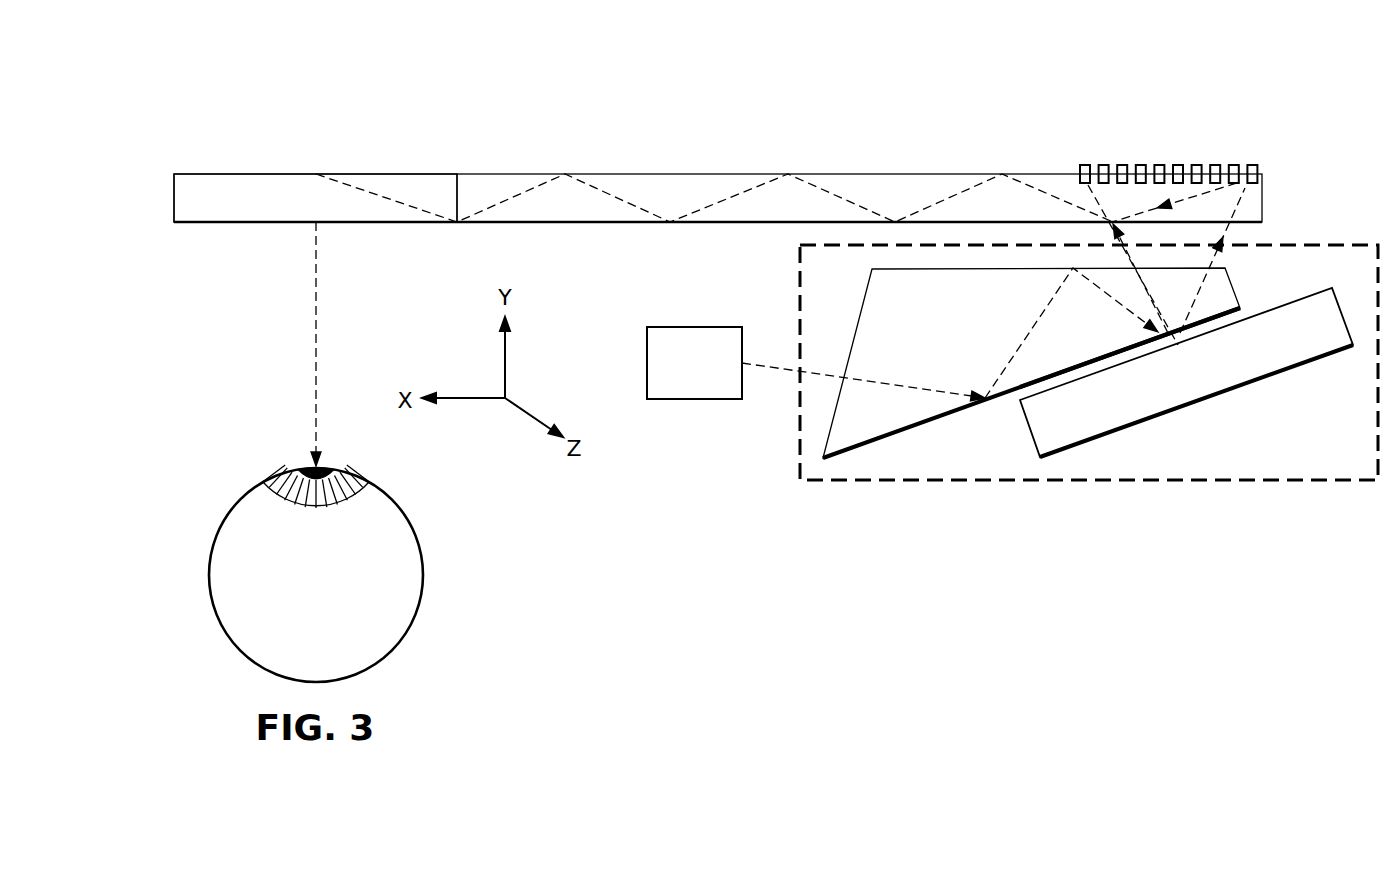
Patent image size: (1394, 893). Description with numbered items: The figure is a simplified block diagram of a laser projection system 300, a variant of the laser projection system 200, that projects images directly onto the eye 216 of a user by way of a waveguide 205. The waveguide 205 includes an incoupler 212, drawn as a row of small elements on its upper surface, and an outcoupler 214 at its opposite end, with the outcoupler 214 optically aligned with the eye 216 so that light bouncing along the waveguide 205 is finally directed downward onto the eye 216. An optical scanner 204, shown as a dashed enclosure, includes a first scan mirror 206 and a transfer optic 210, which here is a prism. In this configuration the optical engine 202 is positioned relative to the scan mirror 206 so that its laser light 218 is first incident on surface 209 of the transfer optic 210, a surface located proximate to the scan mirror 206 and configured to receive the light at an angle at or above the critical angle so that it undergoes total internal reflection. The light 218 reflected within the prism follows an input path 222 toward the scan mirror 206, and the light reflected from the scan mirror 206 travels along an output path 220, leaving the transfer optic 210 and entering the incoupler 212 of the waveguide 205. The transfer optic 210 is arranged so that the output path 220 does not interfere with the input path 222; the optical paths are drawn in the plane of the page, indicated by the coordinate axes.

The laser projection system 300 is at (295, 105).
The outcoupler 214 is at (243, 185).
The waveguide 205 is at (670, 183).
The incoupler 212 is at (1212, 163).
The eye 216 is at (227, 637).
The optical scanner 204 is at (1234, 492).
The optical engine 202 is at (694, 363).
The laser projection system 200 is at (838, 302).
The transfer optic 210 is at (1014, 362).
The surface 209 is at (950, 412).
The output path 220 is at (1197, 297).
The input path 222 is at (1035, 328).
The laser light 218 is at (788, 373).
The first scan mirror 206 is at (1305, 363).